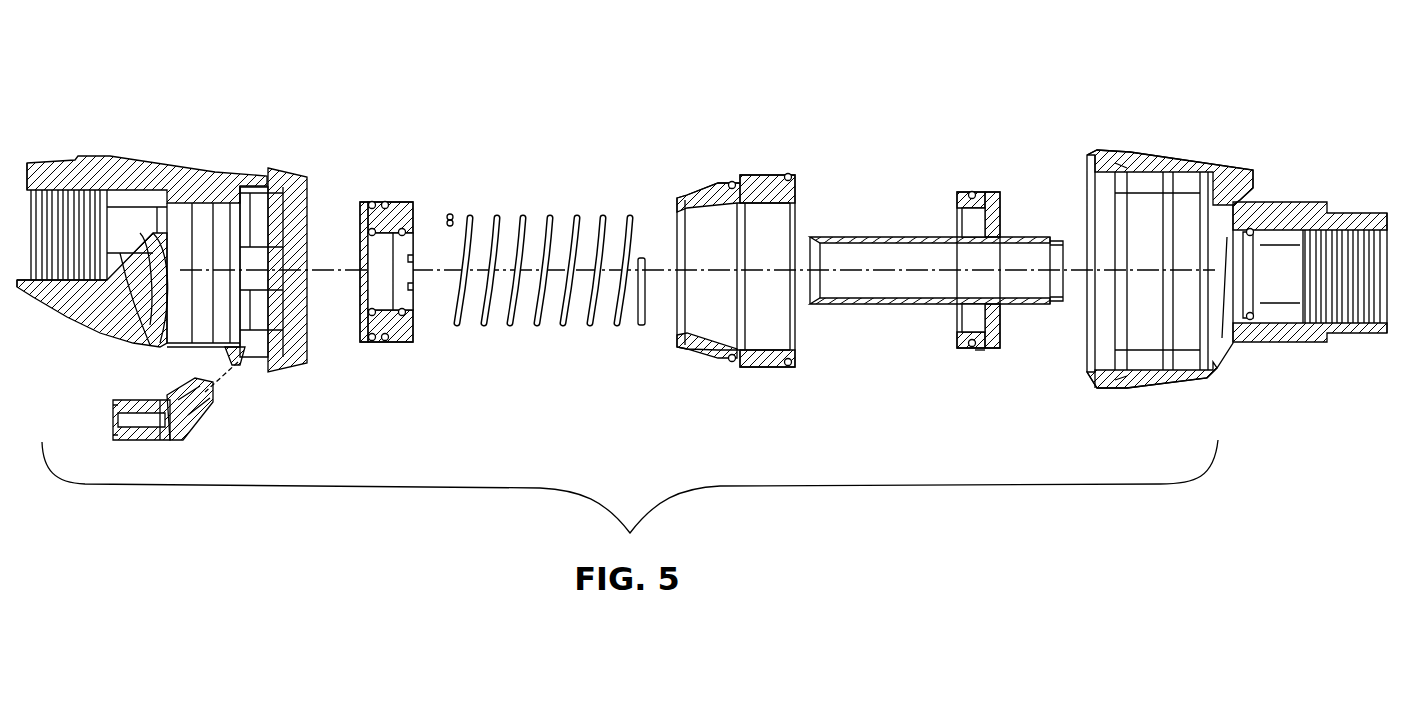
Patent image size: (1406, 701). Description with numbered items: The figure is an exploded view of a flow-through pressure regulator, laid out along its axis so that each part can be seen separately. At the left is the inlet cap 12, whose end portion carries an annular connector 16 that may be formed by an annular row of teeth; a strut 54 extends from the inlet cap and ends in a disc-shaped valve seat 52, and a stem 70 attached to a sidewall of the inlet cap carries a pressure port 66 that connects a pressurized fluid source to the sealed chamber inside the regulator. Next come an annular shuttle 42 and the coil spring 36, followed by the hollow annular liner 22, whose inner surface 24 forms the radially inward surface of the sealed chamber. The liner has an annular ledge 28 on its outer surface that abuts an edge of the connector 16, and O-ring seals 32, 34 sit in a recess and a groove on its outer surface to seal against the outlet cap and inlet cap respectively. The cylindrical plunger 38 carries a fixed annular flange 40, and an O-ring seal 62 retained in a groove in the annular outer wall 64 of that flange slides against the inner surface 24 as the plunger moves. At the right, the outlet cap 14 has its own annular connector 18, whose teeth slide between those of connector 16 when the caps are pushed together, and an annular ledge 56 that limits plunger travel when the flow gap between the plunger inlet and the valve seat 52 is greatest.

The inlet cap 12 is at (212, 187).
The outlet cap 14 is at (1227, 182).
The annular connector 16 is at (287, 180).
The annular connector 18 is at (1087, 183).
The liner 22 is at (752, 175).
The inner surface 24 is at (760, 200).
The annular ledge 28 is at (307, 367).
The O-ring seal 32 is at (788, 368).
The O-ring seal 34 is at (732, 365).
The coil spring 36 is at (550, 218).
The plunger 38 is at (907, 237).
The annular flange 40 is at (985, 192).
The annular shuttle 42 is at (402, 200).
The valve seat 52 is at (147, 347).
The strut 54 is at (77, 315).
The annular ledge 56 is at (1227, 343).
The O-ring seal 62 is at (972, 350).
The annular outer wall 64 is at (990, 350).
The pressure port 66 is at (112, 420).
The stem 70 is at (178, 428).